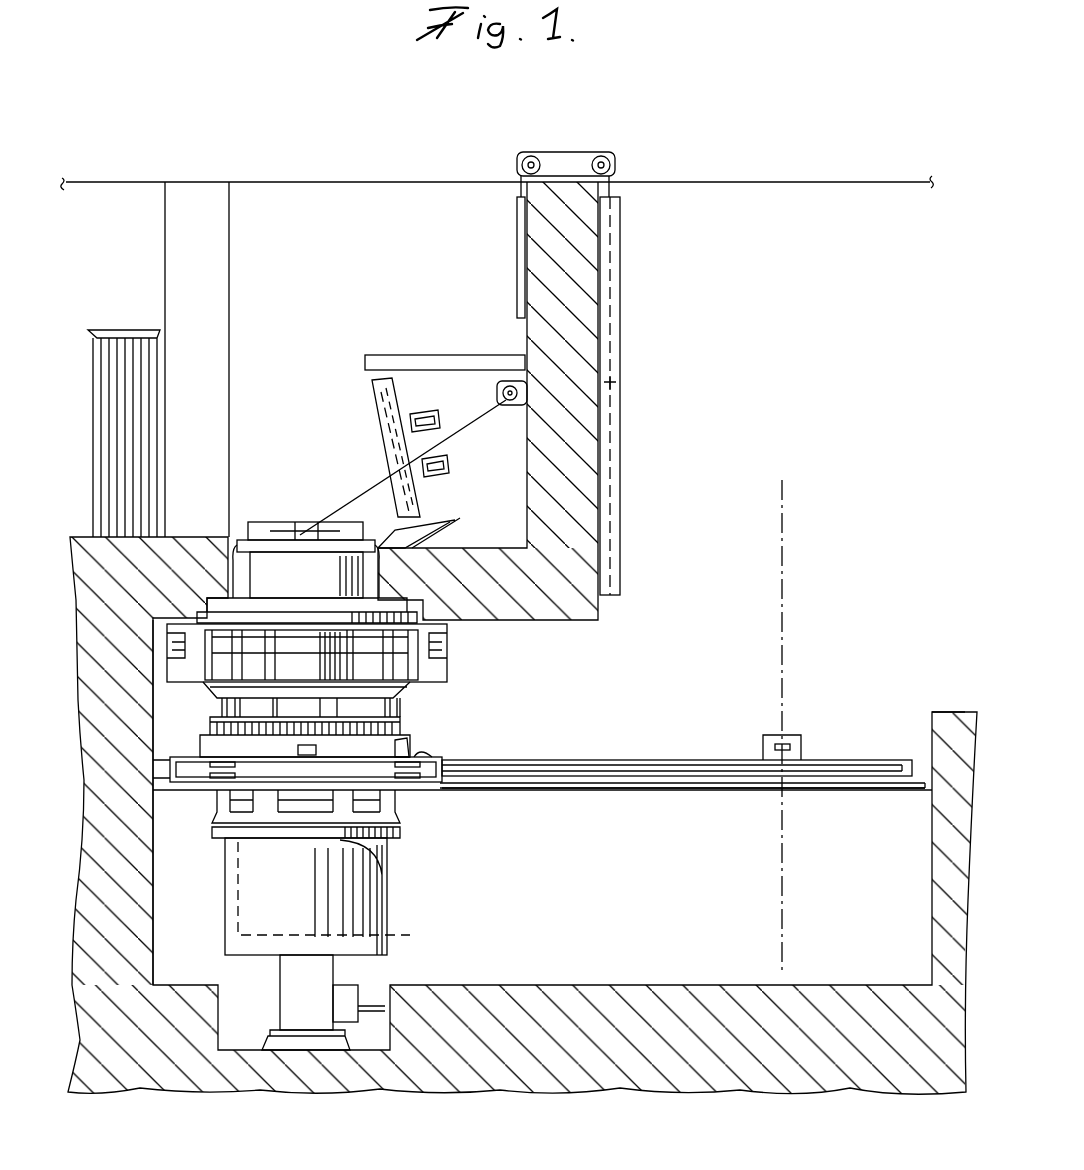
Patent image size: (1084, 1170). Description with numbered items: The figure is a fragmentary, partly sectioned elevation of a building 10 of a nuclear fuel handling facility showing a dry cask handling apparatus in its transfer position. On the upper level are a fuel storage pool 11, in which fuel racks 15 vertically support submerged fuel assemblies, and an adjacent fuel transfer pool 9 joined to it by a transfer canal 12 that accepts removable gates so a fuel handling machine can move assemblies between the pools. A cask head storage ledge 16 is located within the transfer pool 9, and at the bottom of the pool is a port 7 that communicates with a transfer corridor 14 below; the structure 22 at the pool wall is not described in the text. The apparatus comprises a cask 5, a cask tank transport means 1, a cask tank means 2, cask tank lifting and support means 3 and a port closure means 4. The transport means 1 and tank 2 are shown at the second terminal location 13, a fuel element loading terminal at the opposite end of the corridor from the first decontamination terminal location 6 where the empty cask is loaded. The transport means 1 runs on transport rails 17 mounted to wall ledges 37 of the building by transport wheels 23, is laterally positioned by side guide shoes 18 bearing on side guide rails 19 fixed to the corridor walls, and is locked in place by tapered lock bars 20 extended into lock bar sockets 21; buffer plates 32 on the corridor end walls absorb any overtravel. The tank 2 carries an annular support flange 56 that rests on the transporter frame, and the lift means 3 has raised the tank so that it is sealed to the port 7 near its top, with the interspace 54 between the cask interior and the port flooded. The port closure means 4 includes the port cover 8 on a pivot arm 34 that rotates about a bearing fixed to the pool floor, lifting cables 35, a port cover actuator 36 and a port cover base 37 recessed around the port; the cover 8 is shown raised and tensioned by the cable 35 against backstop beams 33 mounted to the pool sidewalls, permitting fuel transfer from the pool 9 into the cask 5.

The cask tank transport means 1 is at (440, 823).
The cask tank means 2 is at (387, 880).
The cask tank lifting and support means 3 is at (262, 975).
The port closure means 4 is at (343, 459).
The cask 5 is at (387, 940).
The first decontamination terminal location 6 is at (774, 1128).
The pool port 7 is at (278, 589).
The port closure cover 8 is at (372, 398).
The fuel transfer pool 9 is at (360, 251).
The building 10 is at (153, 912).
The fuel storage pool 11 is at (140, 240).
The transfer canal 12 is at (205, 185).
The second terminal location 13 is at (372, 1125).
The transfer corridor 14 is at (645, 970).
The fuel racks 15 is at (124, 330).
The cask head storage ledge 16 is at (448, 353).
The transport rails 17 is at (680, 788).
The transport side guide shoes 18 is at (405, 745).
The transport side guide rails 19 is at (588, 758).
The transport lock bars 20 is at (310, 755).
The lock bar sockets 21 is at (780, 738).
The concrete block 22 is at (575, 620).
The transport wheels 23 is at (178, 757).
The buffer plates 32 is at (932, 735).
The backstop beams 33 is at (440, 470).
The pivot arm 34 is at (440, 535).
The lifting cables 35 is at (455, 418).
The port cover actuator 36 is at (618, 340).
The port cover base 37 is at (345, 577).
The interspace 54 is at (235, 598).
The annular support flange 56 is at (415, 697).